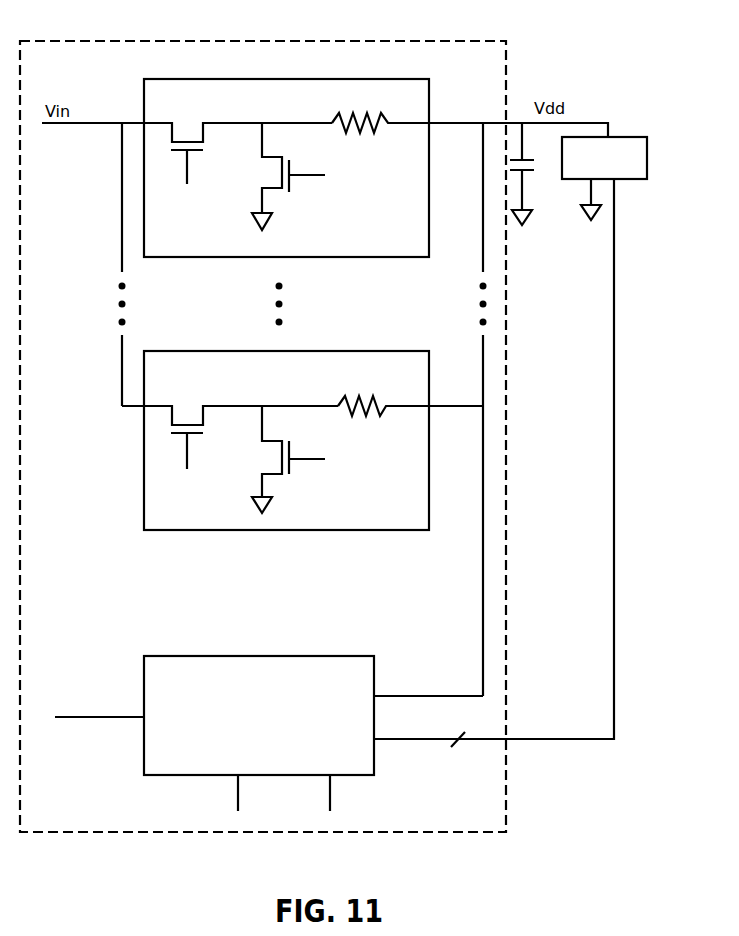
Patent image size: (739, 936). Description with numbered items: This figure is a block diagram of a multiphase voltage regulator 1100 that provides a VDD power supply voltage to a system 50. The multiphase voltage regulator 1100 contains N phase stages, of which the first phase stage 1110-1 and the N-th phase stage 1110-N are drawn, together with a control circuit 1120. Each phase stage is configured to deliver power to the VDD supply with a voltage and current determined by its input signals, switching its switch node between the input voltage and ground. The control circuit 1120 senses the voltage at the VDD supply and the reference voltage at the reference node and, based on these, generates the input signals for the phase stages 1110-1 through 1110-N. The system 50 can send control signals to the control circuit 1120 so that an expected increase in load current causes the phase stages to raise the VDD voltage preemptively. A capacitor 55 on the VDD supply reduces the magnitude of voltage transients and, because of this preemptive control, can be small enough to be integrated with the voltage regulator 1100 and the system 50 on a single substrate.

The multiphase voltage regulator 1100 is at (103, 40).
The phase stage 1110-1 is at (430, 90).
The phase stage 1110-N is at (450, 348).
The control circuit 1120 is at (307, 656).
The system 50 is at (631, 137).
The capacitor 55 is at (535, 167).